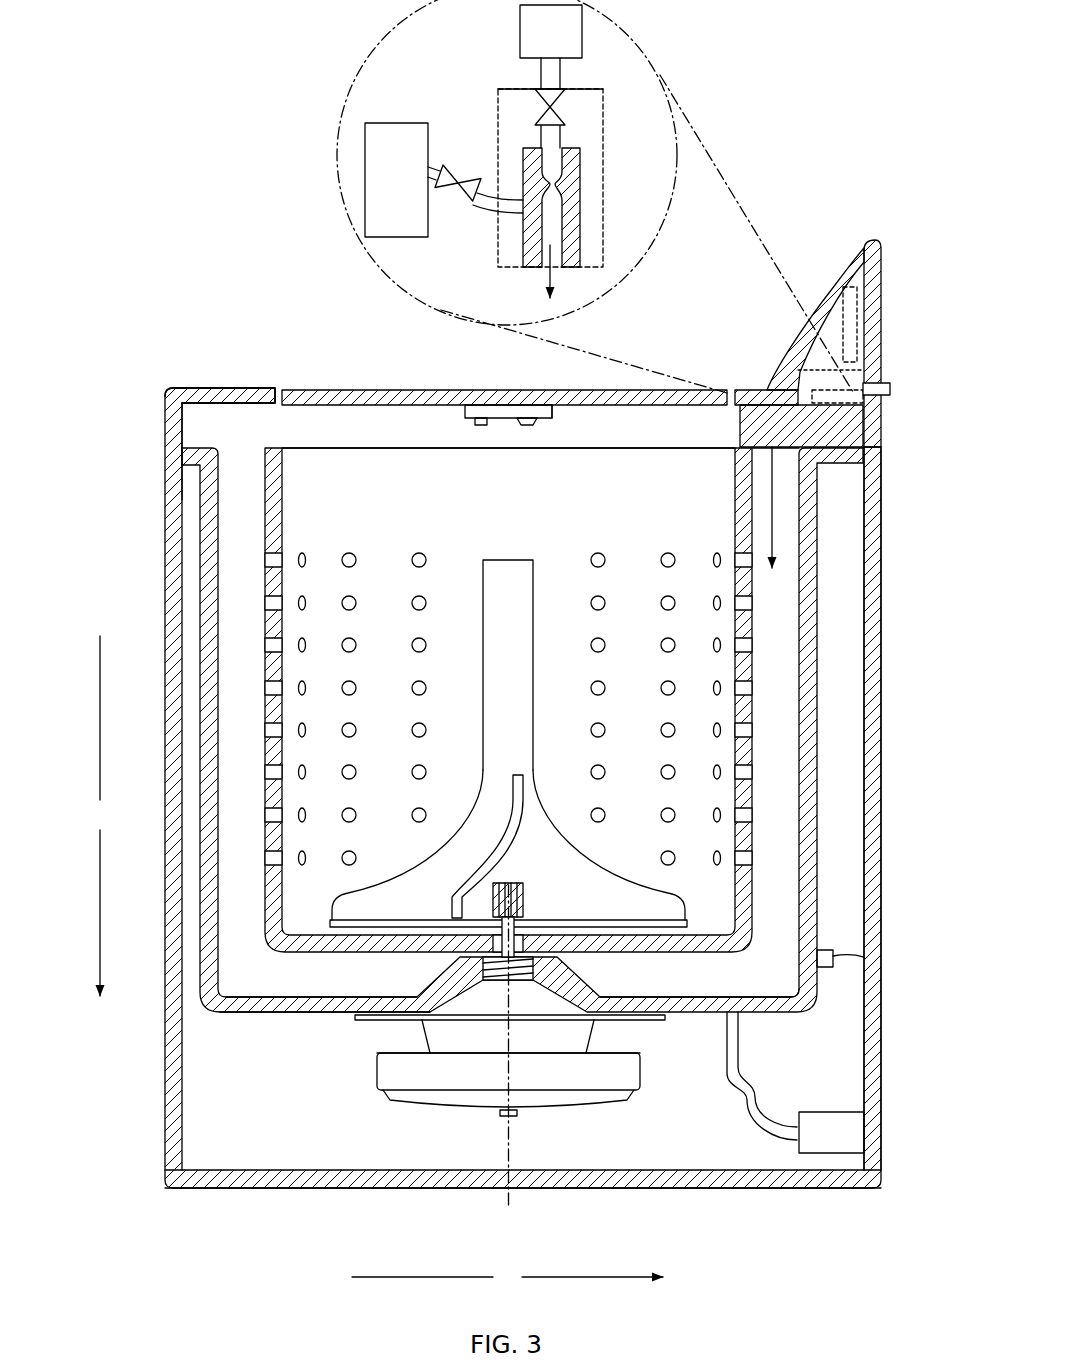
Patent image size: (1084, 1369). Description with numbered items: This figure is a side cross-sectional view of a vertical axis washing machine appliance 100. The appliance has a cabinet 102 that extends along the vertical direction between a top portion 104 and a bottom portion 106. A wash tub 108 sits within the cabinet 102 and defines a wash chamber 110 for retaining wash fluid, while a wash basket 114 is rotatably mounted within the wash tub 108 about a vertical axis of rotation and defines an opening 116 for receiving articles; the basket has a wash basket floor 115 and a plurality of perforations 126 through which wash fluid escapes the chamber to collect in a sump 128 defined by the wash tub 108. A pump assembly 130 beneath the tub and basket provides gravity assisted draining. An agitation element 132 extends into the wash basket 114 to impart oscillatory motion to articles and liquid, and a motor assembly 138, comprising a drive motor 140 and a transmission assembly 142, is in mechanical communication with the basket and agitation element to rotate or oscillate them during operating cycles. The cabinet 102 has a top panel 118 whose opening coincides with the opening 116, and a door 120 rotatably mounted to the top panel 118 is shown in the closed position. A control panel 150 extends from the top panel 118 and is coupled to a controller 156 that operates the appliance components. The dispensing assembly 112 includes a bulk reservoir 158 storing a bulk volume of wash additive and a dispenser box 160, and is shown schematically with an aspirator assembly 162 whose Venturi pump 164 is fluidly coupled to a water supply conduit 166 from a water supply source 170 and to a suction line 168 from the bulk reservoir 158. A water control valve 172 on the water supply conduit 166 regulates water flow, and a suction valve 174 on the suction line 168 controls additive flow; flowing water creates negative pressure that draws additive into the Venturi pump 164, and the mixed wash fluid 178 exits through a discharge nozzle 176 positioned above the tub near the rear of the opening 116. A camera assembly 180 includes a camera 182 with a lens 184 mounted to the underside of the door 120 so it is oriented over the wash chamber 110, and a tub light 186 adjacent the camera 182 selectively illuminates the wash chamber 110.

The washing machine appliance 100 is at (205, 270).
The cabinet 102 is at (175, 498).
The top portion 104 is at (157, 400).
The bottom portion 106 is at (150, 1183).
The wash tub 108 is at (818, 858).
The wash chamber 110 is at (238, 663).
The dispensing assembly 112 is at (850, 395).
The wash basket 114 is at (267, 475).
The wash basket floor 115 is at (605, 955).
The opening 116 is at (600, 446).
The top panel 118 is at (205, 386).
The door 120 is at (400, 386).
The perforations 126 is at (425, 555).
The sump 128 is at (330, 987).
The pump assembly 130 is at (779, 1142).
The agitation element 132 is at (513, 560).
The motor assembly 138 is at (343, 1062).
The drive motor 140 is at (640, 1073).
The transmission assembly 142 is at (578, 1028).
The control panel 150 is at (820, 288).
The controller 156 is at (872, 285).
The bulk reservoir 158 is at (412, 193).
The dispenser box 160 is at (603, 104).
The aspirator assembly 162 is at (512, 140).
The Venturi pump 164 is at (572, 178).
The water supply conduit 166 is at (562, 72).
The suction line 168 is at (485, 207).
The water supply source 170 is at (835, 957).
The water control valve 172 is at (563, 124).
The suction valve 174 is at (458, 200).
The discharge nozzle 176 is at (767, 468).
The wash fluid 178 is at (772, 520).
The camera assembly 180 is at (503, 403).
The camera 182 is at (552, 413).
The lens 184 is at (530, 432).
The tub light 186 is at (482, 426).